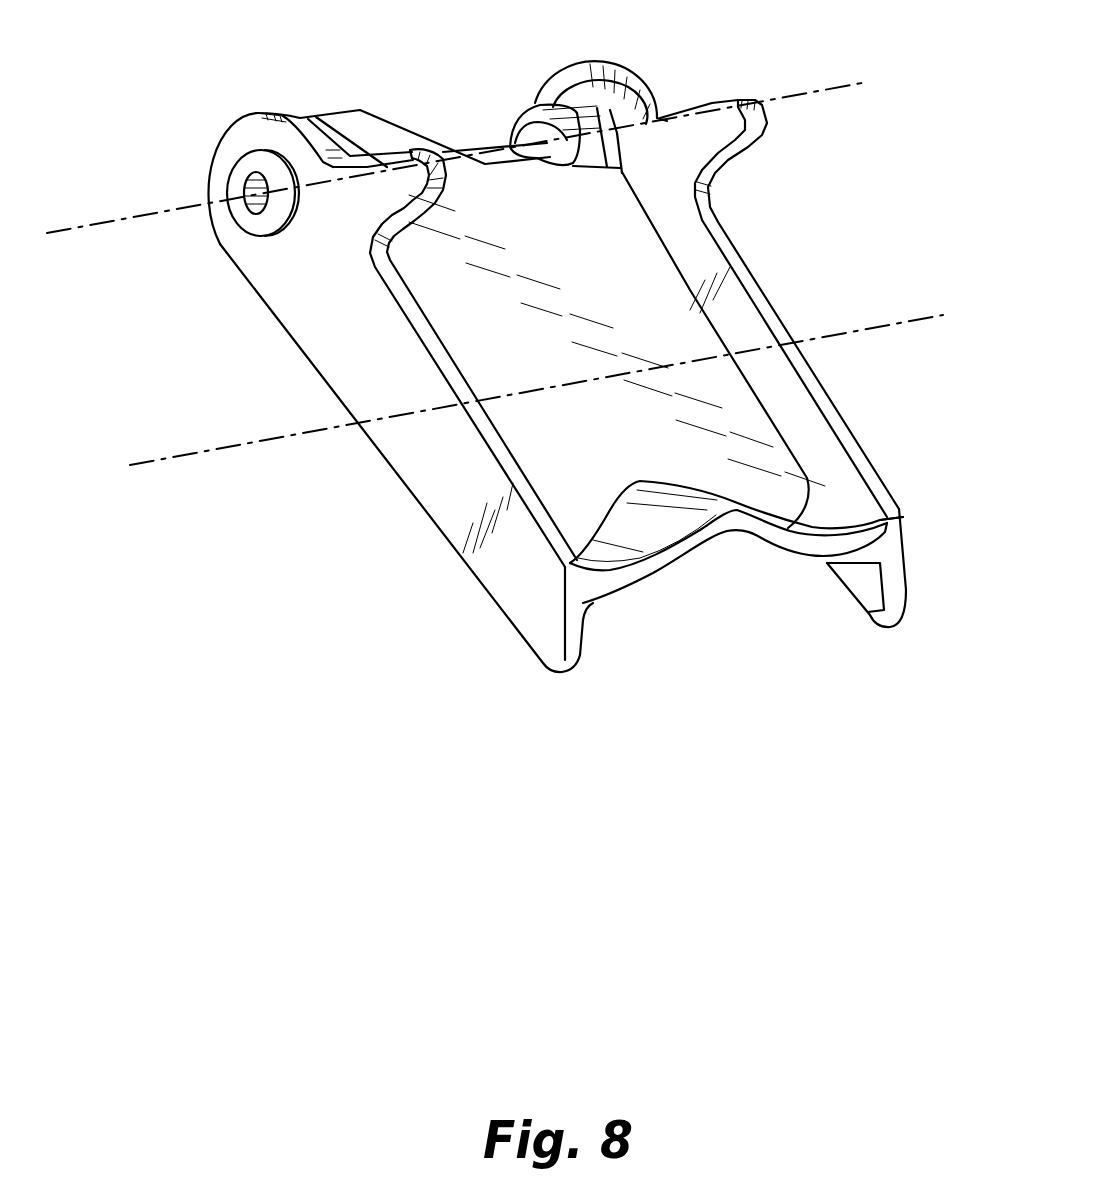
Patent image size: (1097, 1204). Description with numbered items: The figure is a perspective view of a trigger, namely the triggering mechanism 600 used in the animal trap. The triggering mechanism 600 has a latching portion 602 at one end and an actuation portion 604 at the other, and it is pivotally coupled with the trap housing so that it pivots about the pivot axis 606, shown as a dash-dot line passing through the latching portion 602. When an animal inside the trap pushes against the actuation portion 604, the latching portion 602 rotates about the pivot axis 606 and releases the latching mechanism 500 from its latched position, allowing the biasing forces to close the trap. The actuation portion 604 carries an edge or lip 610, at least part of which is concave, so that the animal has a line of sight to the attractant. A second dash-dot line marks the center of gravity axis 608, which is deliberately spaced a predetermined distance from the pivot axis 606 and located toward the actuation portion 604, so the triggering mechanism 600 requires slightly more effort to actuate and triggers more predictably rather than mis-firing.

The latching mechanism 500 is at (385, 135).
The triggering mechanism 600 is at (830, 123).
The latching portion 602 is at (237, 247).
The actuation portion 604 is at (857, 450).
The pivot axis 606 is at (140, 217).
The center of gravity axis 608 is at (213, 447).
The edge or lip 610 is at (738, 531).